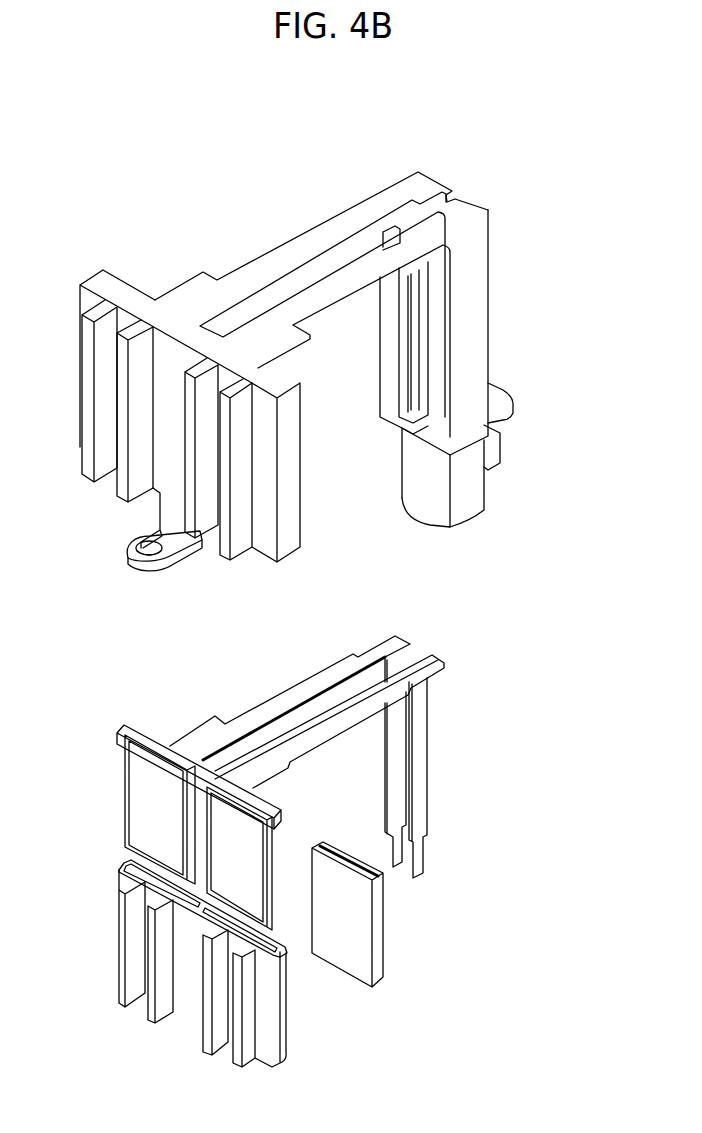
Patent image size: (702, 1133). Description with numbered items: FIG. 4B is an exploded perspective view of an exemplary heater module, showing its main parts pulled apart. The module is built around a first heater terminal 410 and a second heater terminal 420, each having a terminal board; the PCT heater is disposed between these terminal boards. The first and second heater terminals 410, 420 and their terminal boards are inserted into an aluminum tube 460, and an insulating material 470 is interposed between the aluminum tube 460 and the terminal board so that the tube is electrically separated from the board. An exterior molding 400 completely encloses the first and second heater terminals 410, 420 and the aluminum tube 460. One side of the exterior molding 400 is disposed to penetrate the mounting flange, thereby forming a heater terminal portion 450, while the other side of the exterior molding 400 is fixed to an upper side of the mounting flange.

The exterior molding 400 is at (320, 317).
The first heater terminal 410 is at (303, 690).
The second heater terminal 420 is at (307, 733).
The heater terminal portion 450 is at (463, 515).
The aluminum tube 460 is at (262, 1022).
The insulating material 470 is at (360, 947).